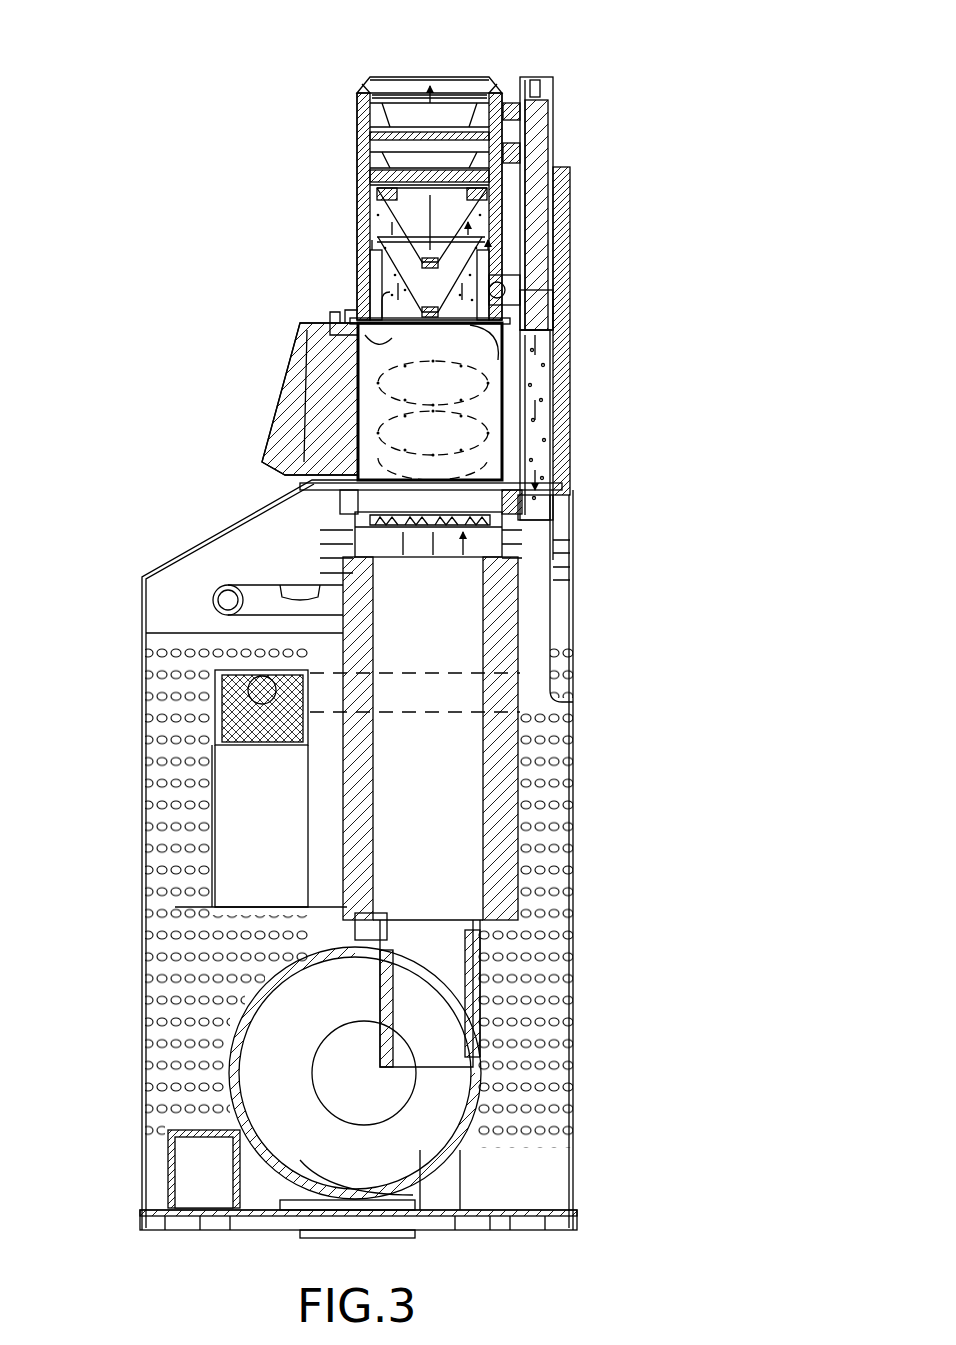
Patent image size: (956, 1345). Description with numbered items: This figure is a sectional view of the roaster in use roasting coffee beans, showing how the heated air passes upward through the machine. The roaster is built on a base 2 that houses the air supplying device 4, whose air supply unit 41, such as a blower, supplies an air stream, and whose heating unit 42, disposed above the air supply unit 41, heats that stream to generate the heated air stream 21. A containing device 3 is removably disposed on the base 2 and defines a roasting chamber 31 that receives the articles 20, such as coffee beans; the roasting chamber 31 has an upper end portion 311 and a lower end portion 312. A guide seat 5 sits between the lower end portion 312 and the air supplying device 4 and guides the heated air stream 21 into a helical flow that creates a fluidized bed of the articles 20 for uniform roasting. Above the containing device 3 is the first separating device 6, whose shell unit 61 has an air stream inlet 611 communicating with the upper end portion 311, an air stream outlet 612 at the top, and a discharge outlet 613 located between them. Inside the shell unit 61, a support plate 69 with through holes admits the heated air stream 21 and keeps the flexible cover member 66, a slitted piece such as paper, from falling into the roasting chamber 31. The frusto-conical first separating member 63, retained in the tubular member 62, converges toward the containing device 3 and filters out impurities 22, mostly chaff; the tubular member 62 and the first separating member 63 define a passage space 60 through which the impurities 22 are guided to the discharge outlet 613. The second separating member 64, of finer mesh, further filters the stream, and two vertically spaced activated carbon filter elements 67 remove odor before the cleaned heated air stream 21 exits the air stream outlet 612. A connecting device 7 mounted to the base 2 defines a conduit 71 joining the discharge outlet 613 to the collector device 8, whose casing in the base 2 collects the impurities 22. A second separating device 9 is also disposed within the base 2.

The base 2 is at (187, 547).
The containing device 3 is at (266, 399).
The air supplying device 4 is at (492, 752).
The guide seat 5 is at (503, 522).
The first separating device 6 is at (347, 165).
The connecting device 7 is at (553, 602).
The collector device 8 is at (215, 797).
The second separating device 9 is at (222, 703).
The articles 20 is at (493, 400).
The heated air stream 21 is at (473, 542).
The impurities 22 is at (540, 350).
The roasting chamber 31 is at (490, 352).
The air supply unit 41 is at (410, 1140).
The heating unit 42 is at (487, 820).
The passage space 60 is at (493, 350).
The shell unit 61 is at (365, 78).
The tubular member 62 is at (380, 273).
The first separating member 63 is at (470, 268).
The second separating member 64 is at (470, 212).
The flexible cover member 66 is at (410, 310).
The activated carbon filter elements 67 is at (460, 127).
The support plate 69 is at (410, 360).
The conduit 71 is at (537, 453).
The upper end portion 311 is at (527, 333).
The lower end portion 312 is at (537, 493).
The air stream inlet 611 is at (357, 327).
The air stream outlet 612 is at (453, 77).
The discharge outlet 613 is at (497, 282).